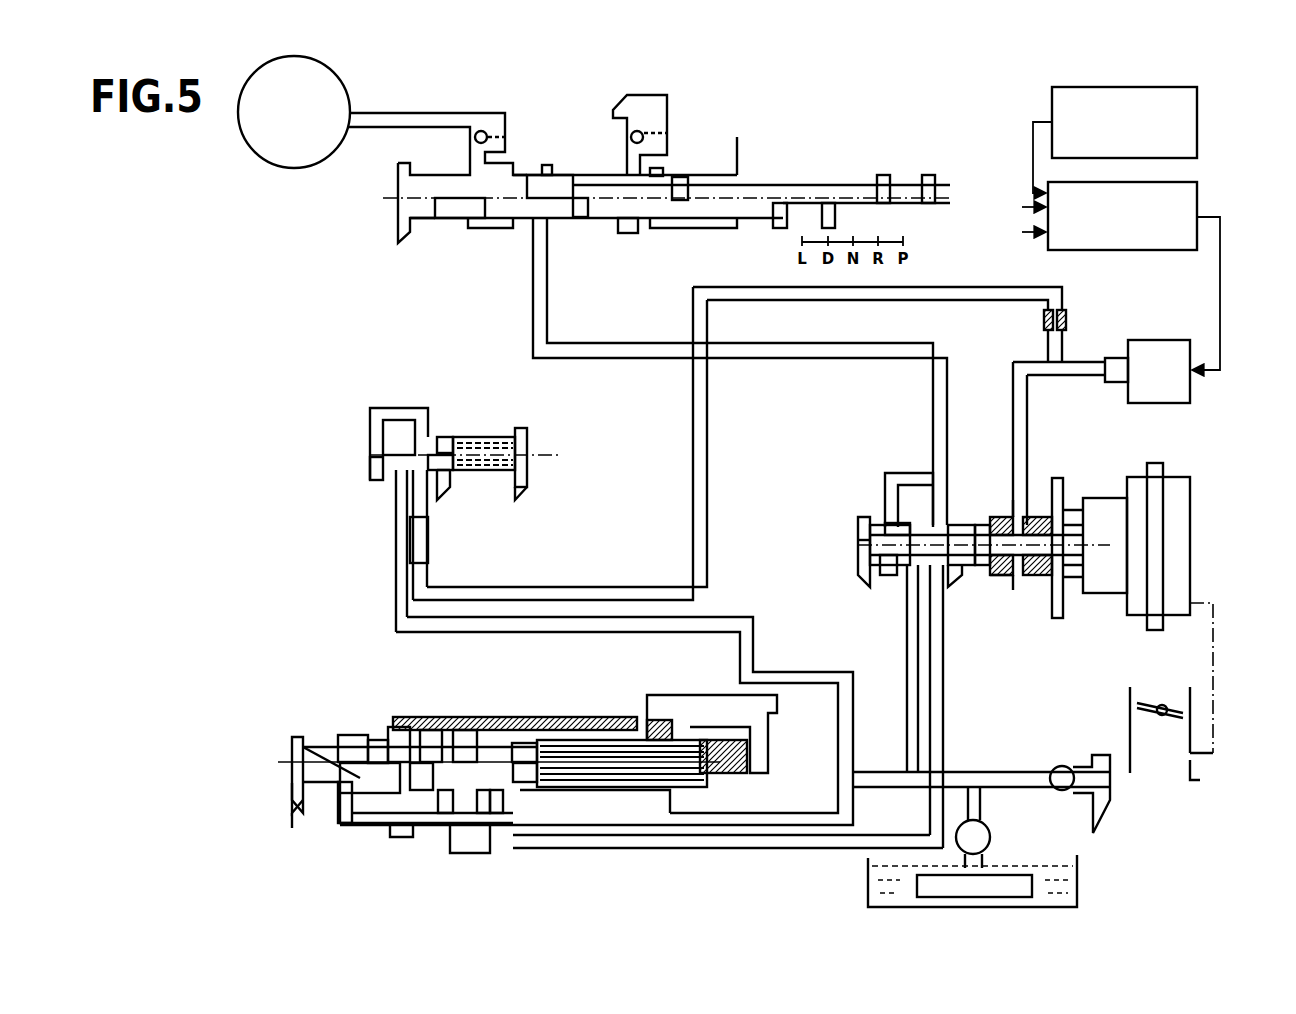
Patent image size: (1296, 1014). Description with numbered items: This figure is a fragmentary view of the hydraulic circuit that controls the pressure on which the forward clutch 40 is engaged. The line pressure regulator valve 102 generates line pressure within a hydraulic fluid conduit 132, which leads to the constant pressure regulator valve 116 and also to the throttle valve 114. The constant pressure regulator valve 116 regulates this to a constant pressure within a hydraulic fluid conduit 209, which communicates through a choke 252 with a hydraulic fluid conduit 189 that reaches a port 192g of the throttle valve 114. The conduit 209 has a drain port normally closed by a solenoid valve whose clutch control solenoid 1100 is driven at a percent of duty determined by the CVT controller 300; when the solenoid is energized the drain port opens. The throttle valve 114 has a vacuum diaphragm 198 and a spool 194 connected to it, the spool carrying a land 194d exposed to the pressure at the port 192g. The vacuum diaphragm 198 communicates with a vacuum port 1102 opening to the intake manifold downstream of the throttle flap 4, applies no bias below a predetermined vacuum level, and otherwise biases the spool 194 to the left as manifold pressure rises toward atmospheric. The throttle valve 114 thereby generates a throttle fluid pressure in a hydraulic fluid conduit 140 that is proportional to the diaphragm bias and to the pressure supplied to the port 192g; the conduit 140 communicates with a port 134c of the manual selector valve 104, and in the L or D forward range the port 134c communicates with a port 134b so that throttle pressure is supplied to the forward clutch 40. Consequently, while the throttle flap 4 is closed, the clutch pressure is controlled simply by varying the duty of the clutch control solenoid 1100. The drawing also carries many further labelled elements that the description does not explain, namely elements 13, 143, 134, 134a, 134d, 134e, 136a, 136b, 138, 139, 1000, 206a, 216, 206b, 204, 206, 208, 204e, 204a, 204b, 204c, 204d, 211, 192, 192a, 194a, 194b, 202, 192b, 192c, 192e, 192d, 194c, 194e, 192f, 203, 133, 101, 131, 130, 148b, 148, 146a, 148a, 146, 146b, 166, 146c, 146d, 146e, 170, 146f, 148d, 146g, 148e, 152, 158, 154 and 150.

The forward clutch 40 is at (347, 100).
The check ball 143 is at (490, 140).
The manual valve spool 134 is at (735, 178).
The shaft 13 is at (822, 186).
The spool land 134a is at (405, 238).
The valve block 136a is at (560, 190).
The valve collar 136b is at (680, 178).
The detent bracket 138 is at (640, 95).
The detent ball 139 is at (643, 133).
The manual selector valve 104 is at (683, 140).
The port 134b is at (490, 228).
The spool land 134d is at (625, 230).
The spool land 134e is at (655, 230).
The port 134c is at (530, 268).
The engine control unit 1000 is at (1200, 125).
The CVT controller 300 is at (1200, 195).
The clutch control solenoid 1100 is at (1150, 340).
The hydraulic fluid conduit 209 is at (1065, 293).
The choke 252 is at (1060, 330).
The hydraulic fluid conduit 189 is at (1027, 400).
The hydraulic fluid conduit 140 is at (925, 400).
The valve housing 206a is at (400, 425).
The valve block 216 is at (383, 445).
The valve collar 206b is at (450, 440).
The valve piston 204 is at (500, 437).
The valve spring 206 is at (515, 445).
The valve spring 208 is at (527, 455).
The piston wall 204e is at (527, 483).
The piston land 204a is at (372, 478).
The hydraulic line 204b is at (400, 485).
The hydraulic line 204c is at (420, 500).
The piston finger 204d is at (447, 490).
The constant pressure regulator valve 116 is at (458, 478).
The orifice 211 is at (428, 545).
The hydraulic fluid conduit 132 is at (398, 625).
The shift valve spool 192 is at (933, 527).
The spool end 192a is at (860, 580).
The spool 194 is at (870, 555).
The valve collar 194a is at (890, 535).
The valve land 194b is at (868, 540).
The valve housing 202 is at (895, 480).
The spool land 192b is at (888, 578).
The hydraulic line 192c is at (905, 620).
The spool land 192e is at (958, 580).
The hydraulic line 192d is at (940, 600).
The valve land 194c is at (978, 527).
The land 194d is at (1000, 517).
The seal 194e is at (1040, 517).
The port 192g is at (1050, 590).
The spool land 192f is at (1000, 580).
The throttle valve 114 is at (1003, 650).
The port 203 is at (1020, 470).
The vacuum diaphragm 198 is at (1150, 472).
The throttle flap 4 is at (1150, 705).
The vacuum port 1102 is at (1190, 770).
The pressure regulator valve 133 is at (1060, 760).
The pump 101 is at (992, 827).
The strainer 131 is at (995, 868).
The oil reservoir 130 is at (1080, 872).
The spool end 148b is at (292, 745).
The valve spool 148 is at (300, 778).
The spool end 146a is at (292, 800).
The spool land 148a is at (325, 785).
The line pressure regulator valve 102 is at (292, 828).
The valve body 146 is at (360, 775).
The valve housing 146b is at (378, 852).
The drain port 166 is at (397, 838).
The valve land 146c is at (400, 730).
The valve land 146d is at (428, 793).
The valve port 146e is at (455, 812).
The valve port 170 is at (500, 812).
The valve port 146f is at (497, 815).
The spool land 148d is at (465, 730).
The valve land 146g is at (518, 748).
The spool land 148e is at (527, 785).
The valve housing 152 is at (645, 690).
The end plate 158 is at (770, 700).
The spring 154 is at (692, 752).
The spring seat 150 is at (720, 773).